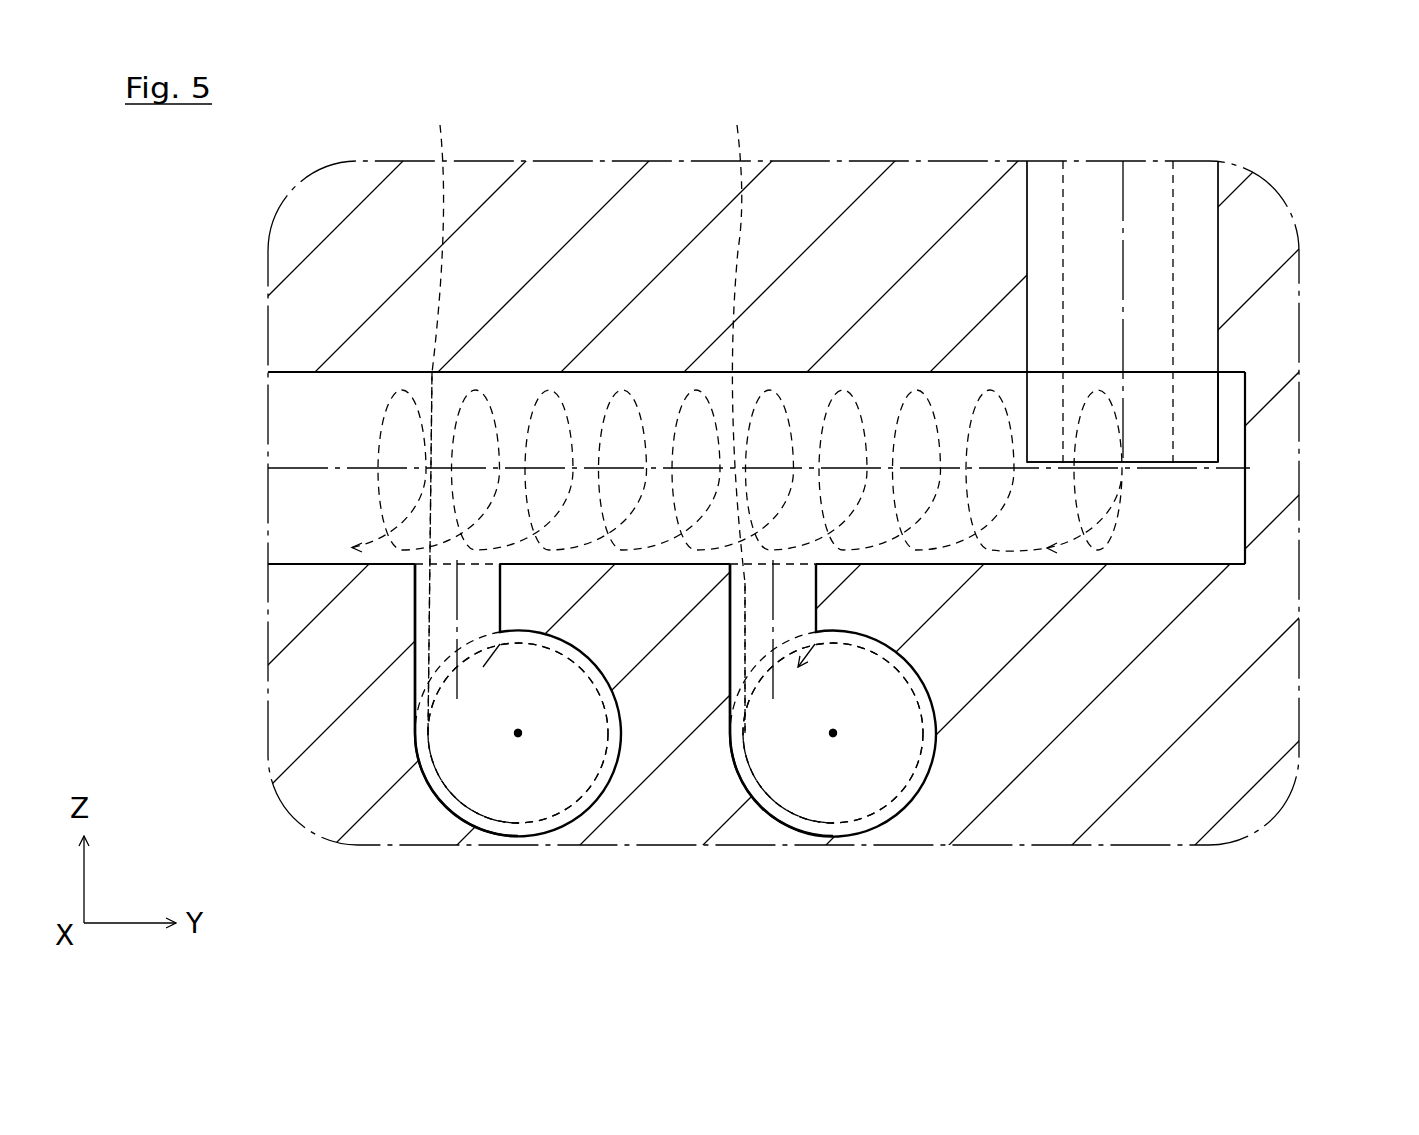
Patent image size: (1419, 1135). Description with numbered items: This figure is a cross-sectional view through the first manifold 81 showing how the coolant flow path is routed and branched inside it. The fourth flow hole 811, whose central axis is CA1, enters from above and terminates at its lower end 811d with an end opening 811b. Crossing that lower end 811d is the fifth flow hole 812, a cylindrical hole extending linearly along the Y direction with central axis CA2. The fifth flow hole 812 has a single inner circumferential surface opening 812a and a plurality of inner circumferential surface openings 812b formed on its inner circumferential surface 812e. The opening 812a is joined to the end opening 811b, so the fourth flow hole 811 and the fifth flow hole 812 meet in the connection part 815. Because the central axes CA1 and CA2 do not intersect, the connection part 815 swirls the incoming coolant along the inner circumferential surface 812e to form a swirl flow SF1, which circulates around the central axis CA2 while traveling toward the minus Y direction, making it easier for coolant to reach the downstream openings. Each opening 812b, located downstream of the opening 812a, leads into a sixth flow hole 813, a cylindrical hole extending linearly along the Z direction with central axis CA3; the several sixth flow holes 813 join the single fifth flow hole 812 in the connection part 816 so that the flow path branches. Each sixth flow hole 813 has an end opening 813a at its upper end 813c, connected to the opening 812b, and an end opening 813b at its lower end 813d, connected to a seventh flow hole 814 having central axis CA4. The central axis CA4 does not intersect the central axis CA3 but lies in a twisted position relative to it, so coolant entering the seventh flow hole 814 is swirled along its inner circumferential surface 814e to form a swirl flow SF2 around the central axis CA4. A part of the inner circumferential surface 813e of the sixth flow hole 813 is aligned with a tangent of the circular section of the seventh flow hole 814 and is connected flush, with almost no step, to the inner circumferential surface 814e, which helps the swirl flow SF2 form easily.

The first manifold 81 is at (1249, 725).
The fourth flow hole 811 is at (1218, 227).
The end opening 811b is at (1043, 373).
The lower end 811d is at (1190, 466).
The fifth flow hole 812 is at (1245, 529).
The inner circumferential surface opening 812a is at (1191, 368).
The inner circumferential surface opening 812b is at (407, 578).
The inner circumferential surface 812e is at (1208, 563).
The sixth flow hole 813 is at (415, 607).
The end opening 813a is at (590, 398).
The end opening 813b is at (417, 697).
The upper end 813c is at (592, 413).
The lower end 813d is at (491, 847).
The inner circumferential surface 813e is at (415, 677).
The seventh flow hole 814 is at (543, 840).
The inner circumferential surface 814e is at (578, 807).
The connection part 815 is at (1221, 412).
The connection part 816 is at (502, 558).
The central axis CA1 is at (1123, 250).
The central axis CA2 is at (1226, 462).
The central axis CA3 is at (457, 629).
The central axis CA4 is at (518, 733).
The swirl flow SF1 is at (377, 430).
The swirl flow SF2 is at (425, 778).